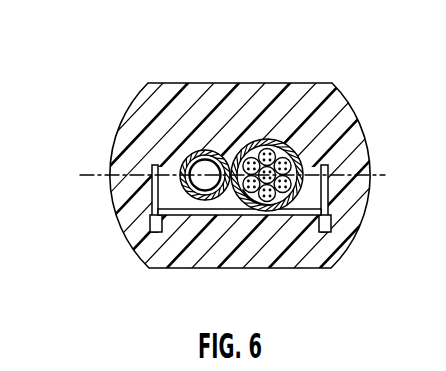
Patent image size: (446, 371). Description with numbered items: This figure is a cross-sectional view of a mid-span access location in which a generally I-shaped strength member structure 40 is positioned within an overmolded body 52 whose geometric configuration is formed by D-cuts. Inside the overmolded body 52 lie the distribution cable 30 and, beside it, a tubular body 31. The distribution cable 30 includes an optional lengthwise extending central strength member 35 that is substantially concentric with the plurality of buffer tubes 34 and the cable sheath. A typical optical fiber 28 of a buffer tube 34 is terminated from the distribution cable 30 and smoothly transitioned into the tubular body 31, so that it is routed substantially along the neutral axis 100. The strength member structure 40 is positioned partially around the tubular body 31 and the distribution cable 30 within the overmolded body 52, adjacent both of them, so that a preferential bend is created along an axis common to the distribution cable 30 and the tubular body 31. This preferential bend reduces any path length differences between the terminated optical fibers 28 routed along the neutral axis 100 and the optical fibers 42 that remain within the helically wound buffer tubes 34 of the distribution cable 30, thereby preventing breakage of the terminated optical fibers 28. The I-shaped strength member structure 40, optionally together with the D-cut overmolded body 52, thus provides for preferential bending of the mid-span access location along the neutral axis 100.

The neutral axis 100 is at (93, 175).
The overmolded body 52 is at (147, 117).
The strength member structure 40 is at (247, 228).
The optical fibers 42 is at (305, 201).
The tubular body 31 is at (232, 113).
The optical fiber 28 is at (214, 162).
The distribution cable 30 is at (321, 120).
The buffer tubes 34 is at (300, 162).
The central strength member 35 is at (300, 150).